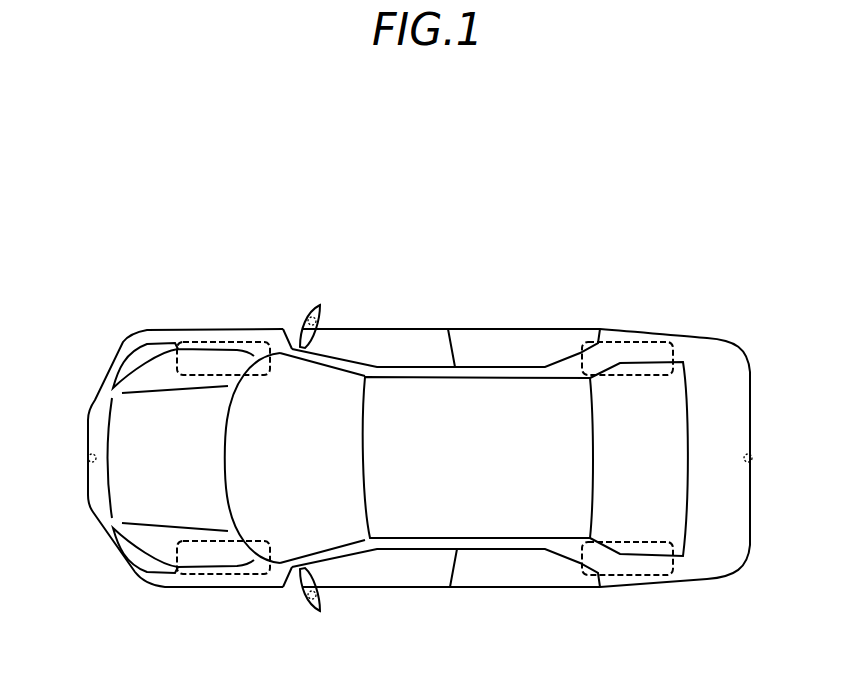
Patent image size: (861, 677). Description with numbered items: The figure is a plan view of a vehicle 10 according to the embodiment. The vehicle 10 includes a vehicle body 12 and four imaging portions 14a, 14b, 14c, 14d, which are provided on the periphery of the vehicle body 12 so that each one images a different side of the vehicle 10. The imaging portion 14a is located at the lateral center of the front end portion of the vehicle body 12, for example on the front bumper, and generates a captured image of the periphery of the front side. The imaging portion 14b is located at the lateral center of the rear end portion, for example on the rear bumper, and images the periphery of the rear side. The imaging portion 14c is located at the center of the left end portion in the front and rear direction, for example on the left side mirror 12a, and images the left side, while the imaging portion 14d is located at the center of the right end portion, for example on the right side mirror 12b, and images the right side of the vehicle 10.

The vehicle 10 is at (458, 294).
The vehicle body 12 is at (555, 327).
The left side mirror 12a is at (323, 607).
The right side mirror 12b is at (323, 309).
The imaging portion 14a is at (88, 459).
The imaging portion 14b is at (752, 459).
The imaging portion 14c is at (312, 600).
The imaging portion 14d is at (313, 316).